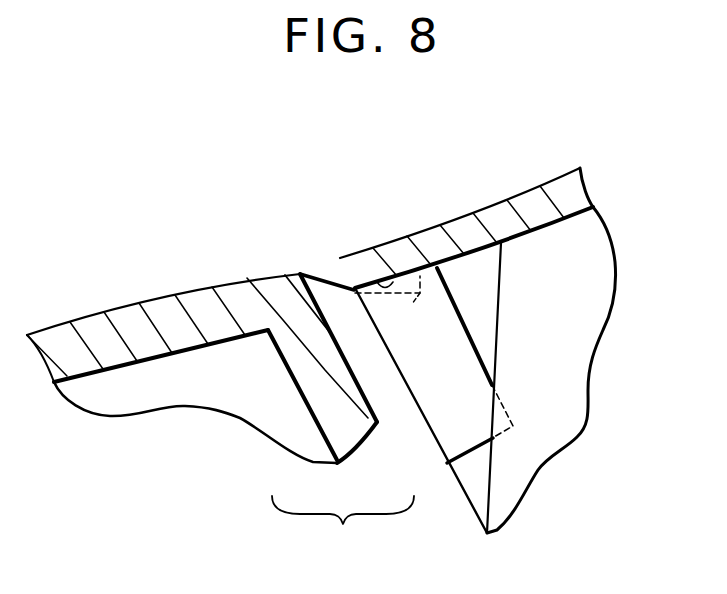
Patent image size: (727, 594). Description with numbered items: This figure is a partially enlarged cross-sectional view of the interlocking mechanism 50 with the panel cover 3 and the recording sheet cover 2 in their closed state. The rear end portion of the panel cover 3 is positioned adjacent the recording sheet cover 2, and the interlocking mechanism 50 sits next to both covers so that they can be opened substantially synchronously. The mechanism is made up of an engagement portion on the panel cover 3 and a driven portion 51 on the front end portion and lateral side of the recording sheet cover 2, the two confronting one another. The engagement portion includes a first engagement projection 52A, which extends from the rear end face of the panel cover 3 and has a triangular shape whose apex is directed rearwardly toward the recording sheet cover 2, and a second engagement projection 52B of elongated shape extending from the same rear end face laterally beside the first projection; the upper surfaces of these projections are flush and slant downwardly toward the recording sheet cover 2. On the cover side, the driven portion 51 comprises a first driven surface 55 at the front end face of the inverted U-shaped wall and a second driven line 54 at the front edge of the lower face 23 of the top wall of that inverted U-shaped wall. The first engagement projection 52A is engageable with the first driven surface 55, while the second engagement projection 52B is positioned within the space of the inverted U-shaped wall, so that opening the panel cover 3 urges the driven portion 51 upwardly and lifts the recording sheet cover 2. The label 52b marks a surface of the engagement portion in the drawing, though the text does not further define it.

The recording sheet cover 2 is at (528, 190).
The panel cover 3 is at (142, 303).
The lower face 23 is at (393, 277).
The interlocking mechanism 50 is at (329, 262).
The driven portion 51 is at (343, 531).
The first engagement projection 52A is at (384, 352).
The second engagement projection 52B is at (428, 293).
The inclined surface 52b is at (327, 279).
The second driven line 54 is at (351, 296).
The first driven surface 55 is at (393, 397).